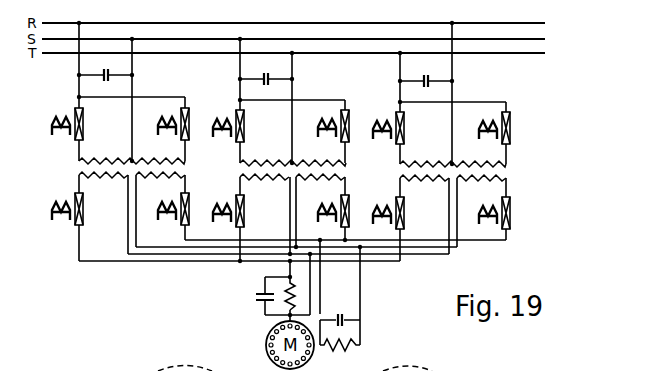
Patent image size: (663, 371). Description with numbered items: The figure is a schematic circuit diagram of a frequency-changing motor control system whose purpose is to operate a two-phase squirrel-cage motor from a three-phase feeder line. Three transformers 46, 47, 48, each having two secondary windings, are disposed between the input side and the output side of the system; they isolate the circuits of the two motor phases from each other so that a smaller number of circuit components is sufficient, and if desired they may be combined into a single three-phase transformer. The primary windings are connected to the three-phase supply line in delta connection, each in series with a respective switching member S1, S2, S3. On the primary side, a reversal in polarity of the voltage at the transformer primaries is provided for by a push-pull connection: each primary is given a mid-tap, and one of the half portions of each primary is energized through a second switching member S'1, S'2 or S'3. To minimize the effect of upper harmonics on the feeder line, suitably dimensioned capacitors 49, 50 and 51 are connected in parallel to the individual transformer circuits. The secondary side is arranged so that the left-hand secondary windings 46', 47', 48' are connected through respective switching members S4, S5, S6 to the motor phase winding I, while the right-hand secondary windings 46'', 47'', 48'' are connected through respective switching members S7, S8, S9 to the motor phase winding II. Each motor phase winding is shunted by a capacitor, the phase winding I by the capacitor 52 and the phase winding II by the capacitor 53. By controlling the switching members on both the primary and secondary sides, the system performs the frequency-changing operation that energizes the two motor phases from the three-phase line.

The transformer 46 is at (147, 164).
The left-hand secondary winding 46' is at (103, 186).
The right-hand secondary winding 46'' is at (160, 186).
The transformer 47 is at (307, 164).
The left-hand secondary winding 47' is at (264, 188).
The right-hand secondary winding 47'' is at (320, 188).
The transformer 48 is at (467, 165).
The left-hand secondary winding 48' is at (424, 189).
The right-hand secondary winding 48'' is at (481, 189).
The capacitor 49 is at (109, 71).
The capacitor 50 is at (271, 73).
The capacitor 51 is at (428, 73).
The capacitor 52 is at (257, 297).
The capacitor 53 is at (341, 307).
The switching member S1 is at (83, 122).
The second switching member S'1 is at (185, 124).
The switching member S2 is at (244, 124).
The second switching member S'2 is at (345, 126).
The switching member S3 is at (404, 126).
The second switching member S'3 is at (506, 128).
The switching member S4 is at (83, 210).
The switching member S5 is at (244, 212).
The switching member S6 is at (404, 214).
The switching member S7 is at (189, 210).
The switching member S8 is at (349, 212).
The switching member S9 is at (510, 214).
The motor phase winding I is at (295, 293).
The motor phase winding II is at (340, 355).